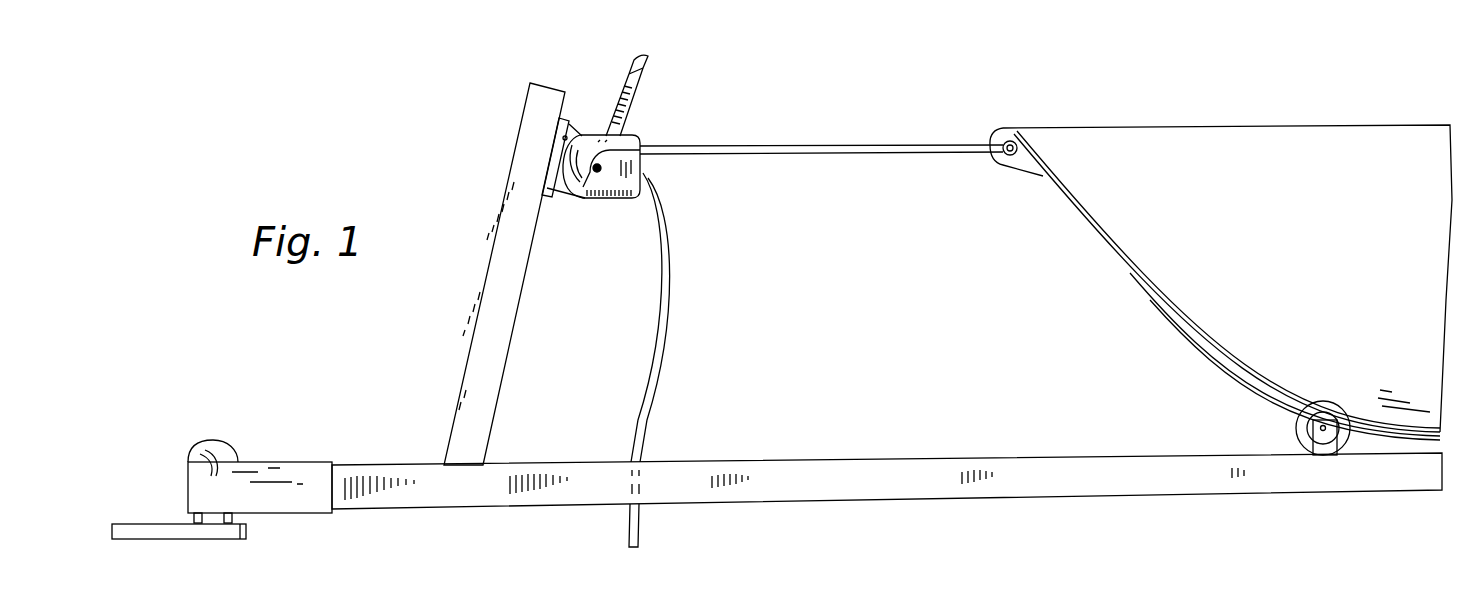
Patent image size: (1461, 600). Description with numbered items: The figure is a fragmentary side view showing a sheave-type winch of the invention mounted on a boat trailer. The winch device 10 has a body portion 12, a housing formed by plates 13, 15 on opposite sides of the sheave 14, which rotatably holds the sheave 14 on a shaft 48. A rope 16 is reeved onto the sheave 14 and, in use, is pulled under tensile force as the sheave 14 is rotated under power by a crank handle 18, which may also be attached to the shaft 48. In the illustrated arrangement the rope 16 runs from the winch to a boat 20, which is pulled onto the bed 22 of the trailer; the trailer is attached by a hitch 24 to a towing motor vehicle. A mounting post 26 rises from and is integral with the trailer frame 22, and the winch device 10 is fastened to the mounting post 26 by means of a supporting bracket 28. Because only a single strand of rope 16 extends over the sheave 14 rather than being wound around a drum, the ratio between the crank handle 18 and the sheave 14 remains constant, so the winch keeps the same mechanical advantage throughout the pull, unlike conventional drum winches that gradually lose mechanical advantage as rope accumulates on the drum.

The winch device 10 is at (659, 131).
The body portion 12 is at (627, 198).
The plate 13 is at (636, 134).
The sheave 14 is at (578, 198).
The plate 15 is at (634, 168).
The rope 16 is at (900, 127).
The crank handle 18 is at (631, 71).
The boat 20 is at (1270, 231).
The bed of trailer 22 is at (886, 466).
The hitch 24 is at (246, 530).
The mounting post 26 is at (504, 242).
The supporting bracket 28 is at (552, 157).
The shaft 48 is at (594, 169).